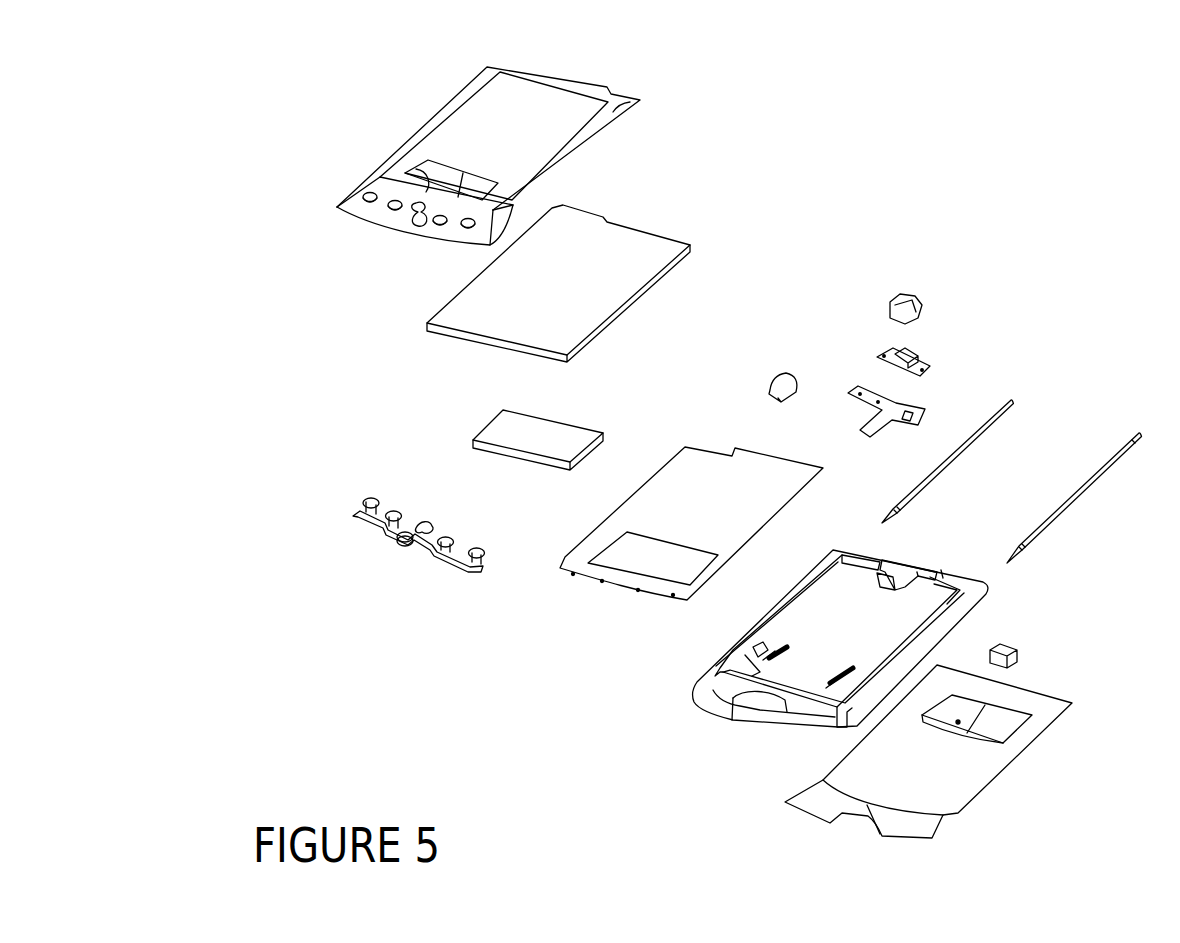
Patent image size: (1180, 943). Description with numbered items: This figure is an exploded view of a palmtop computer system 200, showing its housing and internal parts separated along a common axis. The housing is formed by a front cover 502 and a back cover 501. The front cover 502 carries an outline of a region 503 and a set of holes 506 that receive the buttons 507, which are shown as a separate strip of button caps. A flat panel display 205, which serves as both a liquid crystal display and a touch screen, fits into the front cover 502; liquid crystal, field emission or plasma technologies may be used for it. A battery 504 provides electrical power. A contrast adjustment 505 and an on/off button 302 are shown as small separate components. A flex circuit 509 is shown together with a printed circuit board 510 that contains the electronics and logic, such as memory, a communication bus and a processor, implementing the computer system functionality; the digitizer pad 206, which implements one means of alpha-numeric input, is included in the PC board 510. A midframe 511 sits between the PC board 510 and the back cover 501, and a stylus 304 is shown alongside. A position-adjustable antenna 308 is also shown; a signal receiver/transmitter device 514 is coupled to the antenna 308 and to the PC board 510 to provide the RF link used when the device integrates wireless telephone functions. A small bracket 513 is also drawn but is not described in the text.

The palmtop computer system 200 is at (222, 63).
The front cover 502 is at (607, 117).
The region 503 is at (430, 177).
The holes 506 is at (389, 203).
The flat panel display 205 is at (660, 250).
The battery 504 is at (488, 433).
The buttons 507 is at (437, 565).
The printed circuit (PC) board 510 is at (671, 543).
The digitizer pad 206 is at (628, 560).
The midframe 511 is at (770, 713).
The receiver/transmitter device 514 is at (1018, 653).
The back cover 501 is at (972, 787).
The on/off button 302 is at (903, 295).
The bracket 513 is at (925, 360).
The flex circuit 509 is at (912, 408).
The contrast adjustment 505 is at (782, 378).
The position-adjustable antenna 308 is at (1012, 402).
The stylus 304 is at (1110, 472).